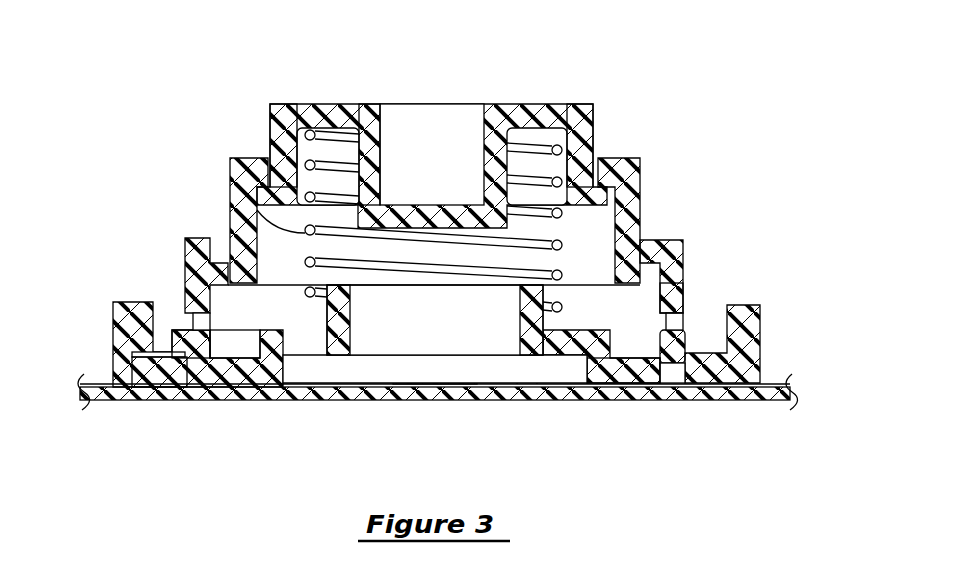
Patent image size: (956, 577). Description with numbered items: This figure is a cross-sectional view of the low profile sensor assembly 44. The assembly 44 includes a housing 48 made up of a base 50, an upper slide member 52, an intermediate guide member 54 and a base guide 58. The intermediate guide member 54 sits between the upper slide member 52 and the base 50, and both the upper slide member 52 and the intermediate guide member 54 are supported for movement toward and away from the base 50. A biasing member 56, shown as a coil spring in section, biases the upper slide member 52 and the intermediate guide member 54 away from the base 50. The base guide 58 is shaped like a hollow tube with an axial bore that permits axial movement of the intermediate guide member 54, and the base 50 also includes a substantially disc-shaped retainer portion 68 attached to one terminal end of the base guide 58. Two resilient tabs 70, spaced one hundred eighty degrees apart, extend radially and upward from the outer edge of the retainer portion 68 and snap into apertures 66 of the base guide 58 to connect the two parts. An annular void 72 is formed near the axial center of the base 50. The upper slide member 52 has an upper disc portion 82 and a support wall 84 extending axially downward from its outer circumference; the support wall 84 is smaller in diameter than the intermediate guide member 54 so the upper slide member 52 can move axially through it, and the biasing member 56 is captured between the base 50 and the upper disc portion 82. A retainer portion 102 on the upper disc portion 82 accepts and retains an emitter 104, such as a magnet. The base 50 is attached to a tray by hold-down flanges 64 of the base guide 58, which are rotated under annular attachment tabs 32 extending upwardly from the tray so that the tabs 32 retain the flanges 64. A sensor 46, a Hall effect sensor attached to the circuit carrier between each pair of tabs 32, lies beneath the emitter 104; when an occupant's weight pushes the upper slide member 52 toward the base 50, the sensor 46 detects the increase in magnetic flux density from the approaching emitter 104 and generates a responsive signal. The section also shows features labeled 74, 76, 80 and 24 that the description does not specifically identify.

The substrate 24 is at (527, 384).
The annular attachment tab 32 is at (679, 365).
The low profile sensor assembly 44 is at (687, 157).
The sensor 46 is at (425, 381).
The housing 48 is at (690, 242).
The base 50 is at (675, 298).
The upper slide member 52 is at (583, 137).
The intermediate guide member 54 is at (640, 183).
The biasing member 56 is at (258, 190).
The base guide 58 is at (187, 273).
The hold-down flange 64 is at (143, 366).
The aperture 66 is at (163, 335).
The retainer portion 68 is at (632, 381).
The resilient tab 70 is at (680, 338).
The annular void 72 is at (323, 373).
The recess 74 is at (273, 330).
The recess 76 is at (228, 357).
The piston 80 is at (350, 300).
The upper disc portion 82 is at (434, 131).
The support wall 84 is at (287, 133).
The retainer portion 102 is at (372, 138).
The emitter 104 is at (428, 140).